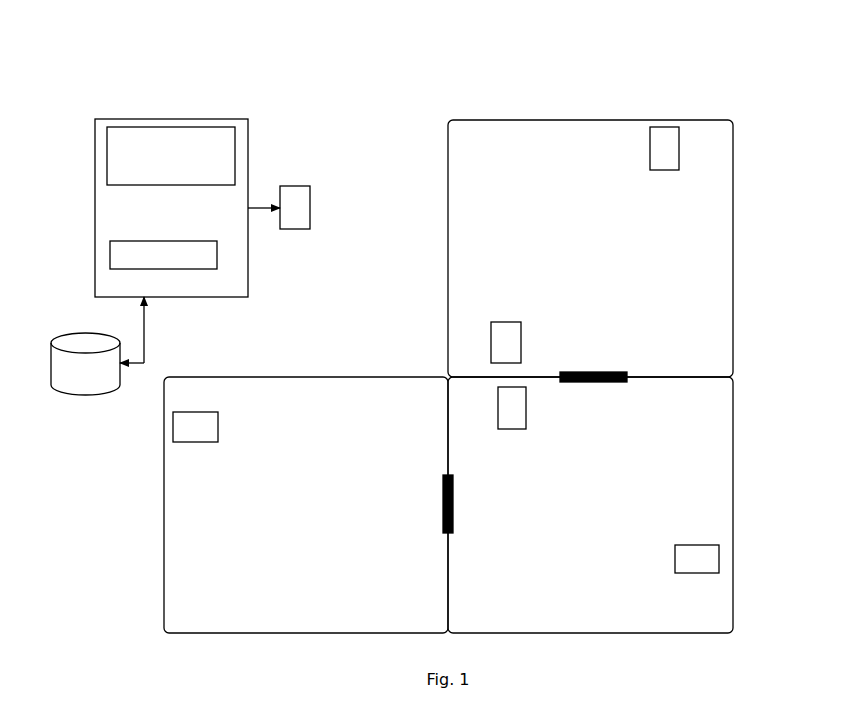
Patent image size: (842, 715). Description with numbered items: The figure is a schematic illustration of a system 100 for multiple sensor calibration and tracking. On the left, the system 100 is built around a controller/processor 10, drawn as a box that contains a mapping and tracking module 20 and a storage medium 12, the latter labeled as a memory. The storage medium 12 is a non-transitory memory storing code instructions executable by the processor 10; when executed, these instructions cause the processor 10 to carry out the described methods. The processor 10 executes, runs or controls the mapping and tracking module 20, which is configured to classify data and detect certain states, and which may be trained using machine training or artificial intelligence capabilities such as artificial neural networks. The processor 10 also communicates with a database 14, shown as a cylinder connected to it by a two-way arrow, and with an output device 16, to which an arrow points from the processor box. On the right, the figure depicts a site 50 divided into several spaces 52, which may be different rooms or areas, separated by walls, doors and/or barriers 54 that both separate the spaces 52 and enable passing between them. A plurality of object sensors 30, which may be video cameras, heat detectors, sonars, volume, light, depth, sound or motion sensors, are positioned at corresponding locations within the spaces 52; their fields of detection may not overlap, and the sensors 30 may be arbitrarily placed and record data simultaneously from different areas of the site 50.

The system 100 is at (412, 55).
The controller/processor 10 is at (115, 119).
The storage medium 12 is at (110, 265).
The database 14 is at (77, 385).
The output device 16 is at (287, 216).
The mapping and tracking module 20 is at (235, 128).
The object sensors 30 is at (654, 127).
The site 50 is at (448, 293).
The spaces 52 is at (556, 258).
The walls, doors and/or barriers 54 is at (590, 372).